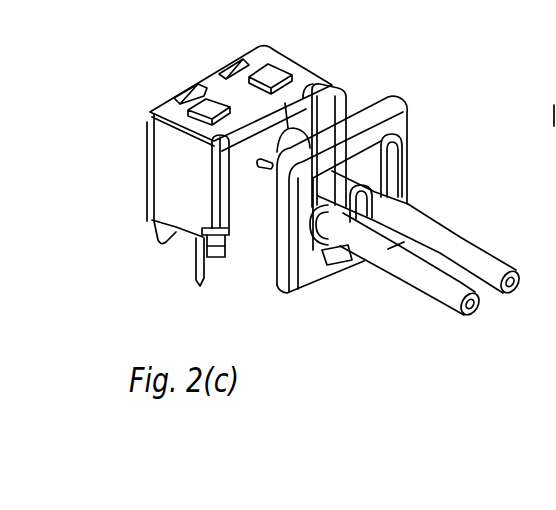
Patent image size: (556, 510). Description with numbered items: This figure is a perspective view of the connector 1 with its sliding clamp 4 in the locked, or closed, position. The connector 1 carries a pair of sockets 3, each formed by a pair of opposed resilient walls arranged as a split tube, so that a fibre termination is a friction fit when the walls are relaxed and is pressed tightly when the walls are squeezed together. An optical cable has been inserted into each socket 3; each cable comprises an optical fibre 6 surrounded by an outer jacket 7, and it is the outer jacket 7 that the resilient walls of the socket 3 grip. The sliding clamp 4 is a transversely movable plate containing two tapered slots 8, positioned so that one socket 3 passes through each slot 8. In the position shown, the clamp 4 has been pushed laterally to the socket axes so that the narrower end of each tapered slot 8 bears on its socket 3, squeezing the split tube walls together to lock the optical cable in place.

The connector 1 is at (128, 106).
The socket 3 is at (313, 82).
The sliding clamp 4 is at (407, 107).
The optical fibre 6 is at (513, 294).
The outer jacket 7 is at (513, 262).
The tapered slot 8 is at (392, 163).